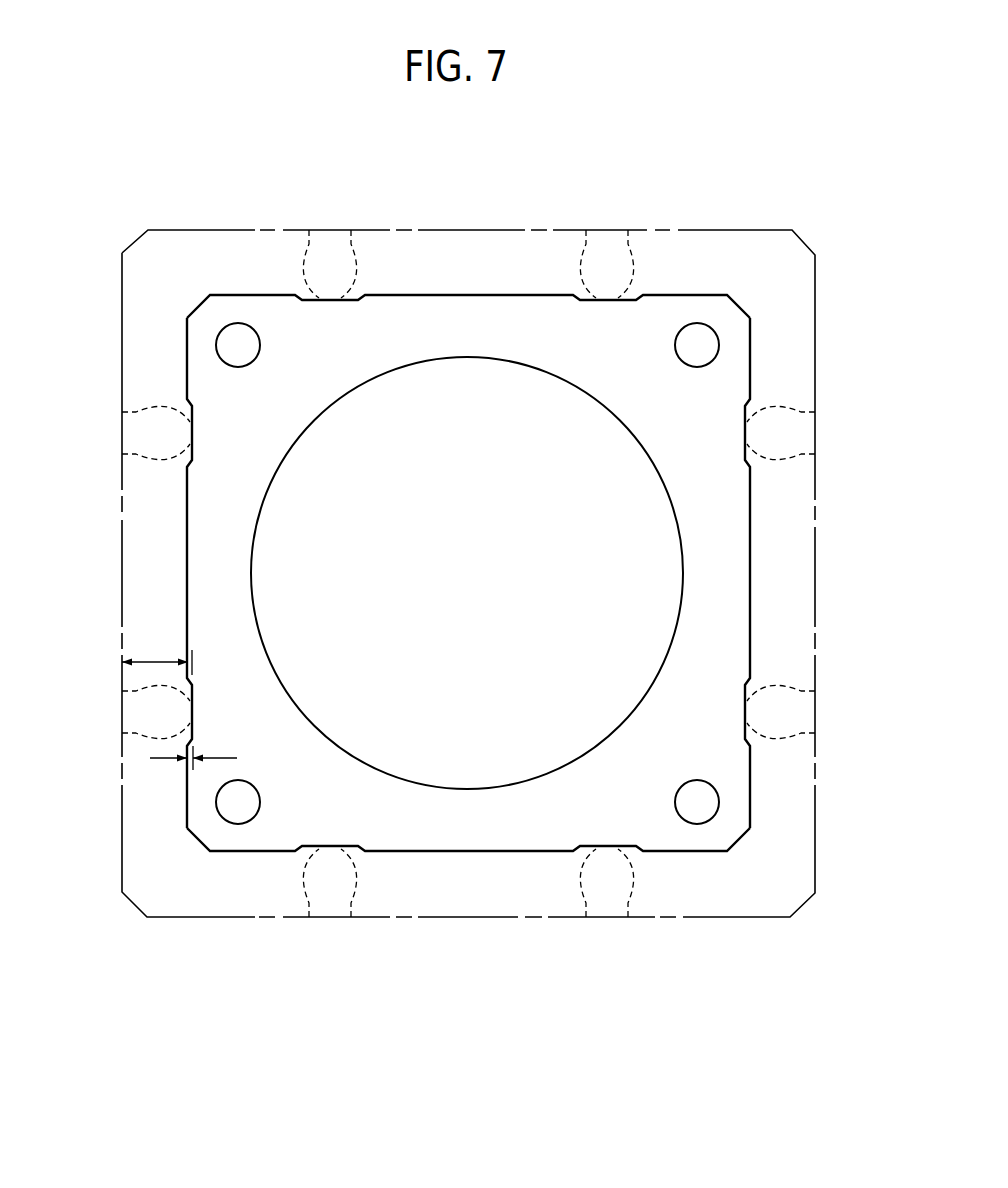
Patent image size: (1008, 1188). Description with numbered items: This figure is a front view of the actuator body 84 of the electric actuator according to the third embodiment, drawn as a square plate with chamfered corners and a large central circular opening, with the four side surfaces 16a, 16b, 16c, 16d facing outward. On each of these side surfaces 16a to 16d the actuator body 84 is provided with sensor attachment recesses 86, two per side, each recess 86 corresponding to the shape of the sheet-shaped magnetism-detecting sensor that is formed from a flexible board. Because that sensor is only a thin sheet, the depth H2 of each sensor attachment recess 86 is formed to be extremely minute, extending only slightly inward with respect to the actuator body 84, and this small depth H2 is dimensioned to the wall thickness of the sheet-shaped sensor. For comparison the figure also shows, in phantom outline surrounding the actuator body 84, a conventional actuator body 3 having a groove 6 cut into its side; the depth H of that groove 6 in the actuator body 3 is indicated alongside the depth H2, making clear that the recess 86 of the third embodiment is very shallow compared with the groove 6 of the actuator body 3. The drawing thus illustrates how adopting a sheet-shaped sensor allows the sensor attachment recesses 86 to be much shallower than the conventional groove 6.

The actuator body 3 is at (468, 598).
The actuator body 84 is at (683, 272).
The sensor attachment recess 86 is at (468, 576).
The side surface 16a is at (474, 296).
The side surface 16b is at (751, 598).
The side surface 16c is at (481, 853).
The side surface 16d is at (186, 554).
The groove 6 is at (170, 712).
The depth of the groove H is at (157, 654).
The depth of the sensor attachment recess H2 is at (193, 751).